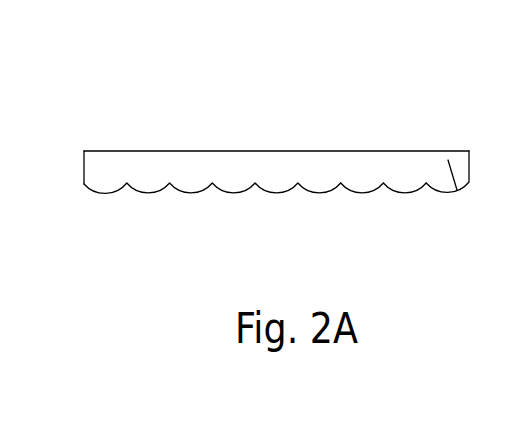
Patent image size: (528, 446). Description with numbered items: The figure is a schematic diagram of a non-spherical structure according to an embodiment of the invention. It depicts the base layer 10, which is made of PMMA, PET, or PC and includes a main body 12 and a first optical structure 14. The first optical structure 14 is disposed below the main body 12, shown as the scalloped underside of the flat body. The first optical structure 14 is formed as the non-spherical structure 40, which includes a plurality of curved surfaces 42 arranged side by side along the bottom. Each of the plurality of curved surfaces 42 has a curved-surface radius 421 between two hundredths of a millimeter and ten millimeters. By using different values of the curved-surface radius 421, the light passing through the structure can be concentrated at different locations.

The base layer 10 is at (298, 136).
The main body 12 is at (327, 158).
The first optical structure 14 is at (298, 207).
The non-spherical structure 40 is at (362, 199).
The curved surfaces 42 is at (469, 196).
The curved-surface radius 421 is at (451, 184).